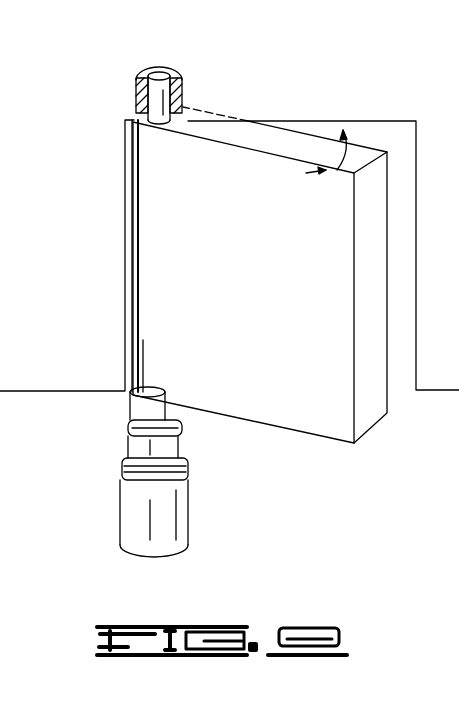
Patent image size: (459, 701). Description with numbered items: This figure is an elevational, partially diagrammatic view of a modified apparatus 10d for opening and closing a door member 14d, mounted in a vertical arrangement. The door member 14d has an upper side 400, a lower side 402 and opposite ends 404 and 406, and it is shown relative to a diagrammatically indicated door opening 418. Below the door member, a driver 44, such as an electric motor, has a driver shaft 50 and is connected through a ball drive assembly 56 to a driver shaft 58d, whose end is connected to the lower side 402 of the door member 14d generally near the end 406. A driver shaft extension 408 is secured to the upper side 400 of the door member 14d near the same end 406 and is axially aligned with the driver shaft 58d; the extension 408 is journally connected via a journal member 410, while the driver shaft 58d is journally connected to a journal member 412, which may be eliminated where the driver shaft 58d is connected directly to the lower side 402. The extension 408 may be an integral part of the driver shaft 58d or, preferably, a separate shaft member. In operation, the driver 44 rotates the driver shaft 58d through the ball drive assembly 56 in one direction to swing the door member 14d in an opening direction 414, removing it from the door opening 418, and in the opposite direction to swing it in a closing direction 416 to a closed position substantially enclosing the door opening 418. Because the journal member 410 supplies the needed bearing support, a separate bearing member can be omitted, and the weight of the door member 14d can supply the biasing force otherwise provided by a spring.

The upper side 400 is at (289, 141).
The lower side 402 is at (300, 433).
The end 404 is at (373, 268).
The end 406 is at (132, 194).
The driver shaft extension 408 is at (160, 76).
The journal member 410 is at (152, 70).
The journal member 412 is at (142, 398).
The opening direction 414 is at (350, 165).
The closing direction 416 is at (320, 156).
The door opening 418 is at (410, 194).
The door member 14d is at (270, 138).
The driver shaft 58d is at (130, 422).
The apparatus 10d is at (118, 437).
The ball drive assembly 56 is at (127, 448).
The driver shaft 50 is at (157, 488).
The driver 44 is at (132, 518).